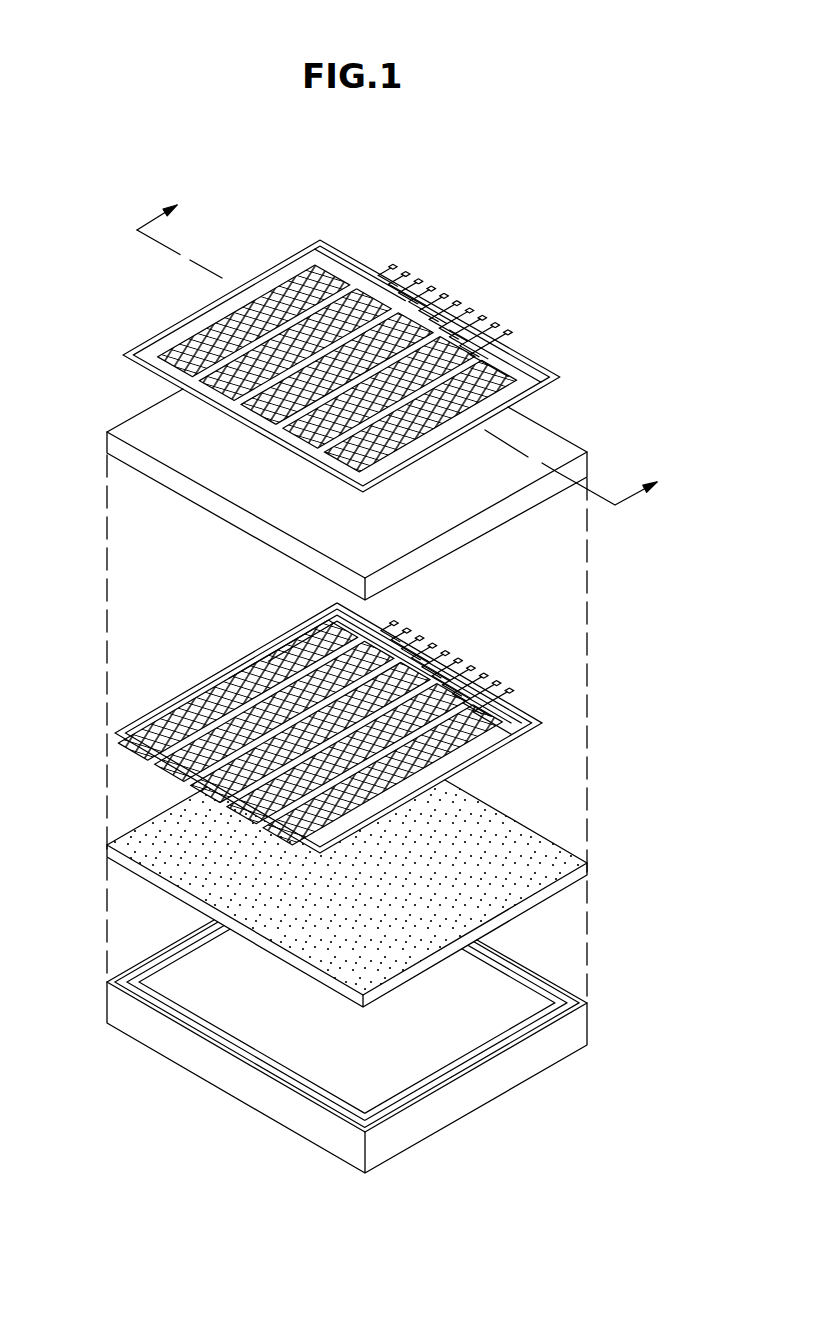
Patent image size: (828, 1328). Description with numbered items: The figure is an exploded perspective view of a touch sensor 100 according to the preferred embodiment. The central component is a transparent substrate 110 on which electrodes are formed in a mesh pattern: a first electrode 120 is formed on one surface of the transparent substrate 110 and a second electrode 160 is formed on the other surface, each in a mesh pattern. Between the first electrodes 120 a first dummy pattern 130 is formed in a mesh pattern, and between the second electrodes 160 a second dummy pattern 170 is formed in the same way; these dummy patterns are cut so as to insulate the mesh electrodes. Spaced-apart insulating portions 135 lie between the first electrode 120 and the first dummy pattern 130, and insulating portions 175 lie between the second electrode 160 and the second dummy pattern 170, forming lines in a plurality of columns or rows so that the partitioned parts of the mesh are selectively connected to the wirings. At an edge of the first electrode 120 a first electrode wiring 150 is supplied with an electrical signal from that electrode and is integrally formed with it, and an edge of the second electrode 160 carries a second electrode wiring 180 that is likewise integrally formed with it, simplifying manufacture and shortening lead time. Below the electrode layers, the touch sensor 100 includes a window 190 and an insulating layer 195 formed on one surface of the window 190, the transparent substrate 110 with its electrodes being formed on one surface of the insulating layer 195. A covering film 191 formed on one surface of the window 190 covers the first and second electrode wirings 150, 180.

The touch sensor 100 is at (560, 245).
The transparent substrate 110 is at (162, 430).
The first electrode 120 is at (254, 321).
The first dummy pattern 130 is at (337, 368).
The insulating portion 135 is at (283, 330).
The first electrode wiring 150 is at (348, 253).
The second electrode 160 is at (165, 760).
The second dummy pattern 170 is at (310, 732).
The insulating portion 175 is at (452, 678).
The second electrode wiring 180 is at (328, 728).
The window 190 is at (570, 1033).
The covering film 191 is at (525, 990).
The insulating layer 195 is at (517, 850).